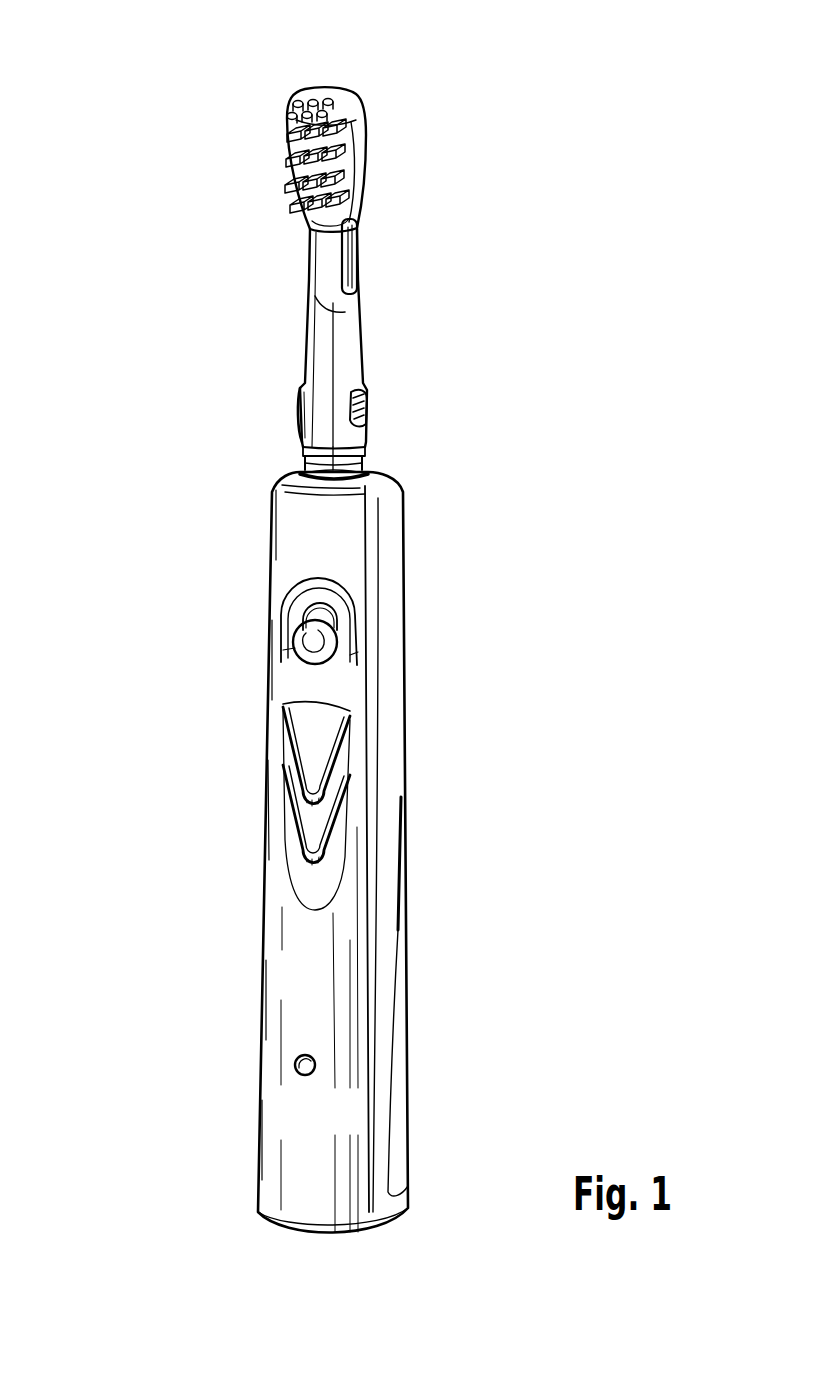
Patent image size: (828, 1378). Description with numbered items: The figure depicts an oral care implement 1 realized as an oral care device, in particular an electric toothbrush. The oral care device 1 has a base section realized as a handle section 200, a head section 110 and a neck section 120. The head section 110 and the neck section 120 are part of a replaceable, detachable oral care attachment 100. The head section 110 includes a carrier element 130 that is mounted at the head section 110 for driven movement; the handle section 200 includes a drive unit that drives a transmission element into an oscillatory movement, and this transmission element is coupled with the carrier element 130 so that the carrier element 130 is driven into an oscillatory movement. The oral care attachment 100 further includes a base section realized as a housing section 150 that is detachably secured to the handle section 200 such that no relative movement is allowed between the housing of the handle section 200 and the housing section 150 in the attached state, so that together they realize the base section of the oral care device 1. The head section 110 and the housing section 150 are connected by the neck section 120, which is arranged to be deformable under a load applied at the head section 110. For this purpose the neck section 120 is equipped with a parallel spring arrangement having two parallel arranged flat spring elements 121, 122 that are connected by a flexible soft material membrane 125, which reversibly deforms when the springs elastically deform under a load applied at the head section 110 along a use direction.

The oral care implement 1 is at (540, 457).
The oral care attachment 100 is at (420, 105).
The head section 110 is at (245, 167).
The neck section 120 is at (245, 271).
The flat spring element 121 is at (372, 245).
The flat spring element 122 is at (340, 313).
The flexible soft material membrane 125 is at (350, 275).
The carrier element 130 is at (348, 172).
The housing section 150 is at (245, 402).
The handle section 200 is at (188, 965).